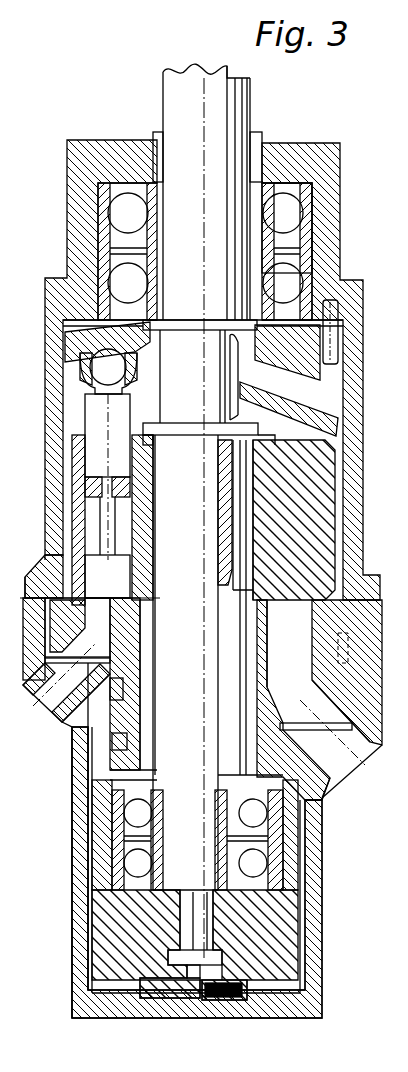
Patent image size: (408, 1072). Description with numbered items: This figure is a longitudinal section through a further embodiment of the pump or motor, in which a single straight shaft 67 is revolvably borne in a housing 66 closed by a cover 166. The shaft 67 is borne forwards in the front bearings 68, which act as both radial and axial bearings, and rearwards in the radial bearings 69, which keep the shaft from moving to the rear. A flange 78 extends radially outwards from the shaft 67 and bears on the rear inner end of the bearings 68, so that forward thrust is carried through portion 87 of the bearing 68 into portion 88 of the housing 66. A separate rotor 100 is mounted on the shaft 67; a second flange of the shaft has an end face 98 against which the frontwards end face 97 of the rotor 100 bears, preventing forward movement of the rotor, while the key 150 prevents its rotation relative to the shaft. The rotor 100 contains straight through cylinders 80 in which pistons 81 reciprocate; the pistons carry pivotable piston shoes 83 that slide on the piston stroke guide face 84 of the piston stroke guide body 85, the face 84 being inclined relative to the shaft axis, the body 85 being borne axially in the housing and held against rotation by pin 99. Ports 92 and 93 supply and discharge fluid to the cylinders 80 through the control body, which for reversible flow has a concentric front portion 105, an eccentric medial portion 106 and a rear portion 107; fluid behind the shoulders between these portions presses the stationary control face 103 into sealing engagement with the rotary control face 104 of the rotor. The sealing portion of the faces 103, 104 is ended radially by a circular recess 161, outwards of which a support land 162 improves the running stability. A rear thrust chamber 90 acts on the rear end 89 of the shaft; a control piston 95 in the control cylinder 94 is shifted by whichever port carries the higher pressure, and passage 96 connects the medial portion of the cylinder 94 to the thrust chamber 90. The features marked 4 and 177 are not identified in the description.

The shaft section 4 is at (149, 428).
The housing 66 is at (87, 140).
The shaft 67 is at (246, 100).
The bearings 68 is at (115, 210).
The bearings 69 is at (126, 860).
The flange 78 is at (162, 322).
The cylinders 80 is at (124, 571).
The pistons 81 is at (128, 531).
The ball 83 is at (131, 366).
The piston stroke guide face 84 is at (289, 409).
The piston stroke guide body 85 is at (290, 358).
The portion of bearing 87 is at (300, 185).
The portion of housing 88 is at (292, 148).
The rear end of the shaft 89 is at (210, 911).
The rear thrust chamber 90 is at (220, 962).
The port 92 is at (340, 782).
The port 93 is at (40, 698).
The control cylinder 94 is at (150, 993).
The control piston 95 is at (220, 1000).
The passage 96 is at (195, 978).
The frontwards end face of the rotor 97 is at (269, 433).
The end face 98 is at (156, 452).
The pin 99 is at (344, 453).
The rotor 100 is at (80, 465).
The stationary control face 103 is at (92, 598).
The rotary control face 104 is at (80, 628).
The control body 105 is at (142, 616).
The eccentric medial portion 106 is at (132, 686).
The rear portion 107 is at (132, 752).
The key 150 is at (240, 475).
The circular recess 161 is at (58, 562).
The support land 162 is at (343, 598).
The cover 166 is at (78, 910).
The flange 177 is at (13, 581).